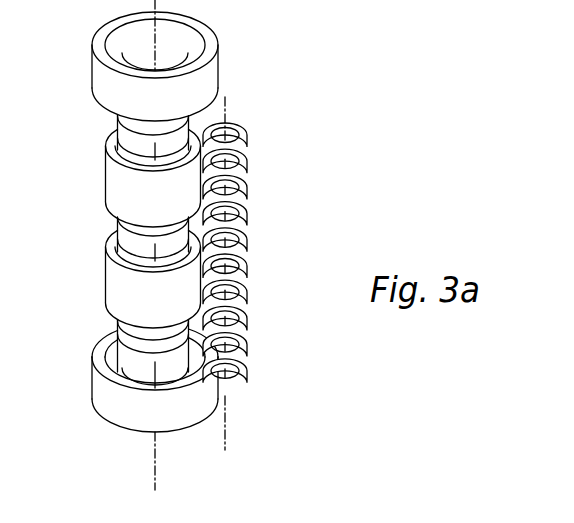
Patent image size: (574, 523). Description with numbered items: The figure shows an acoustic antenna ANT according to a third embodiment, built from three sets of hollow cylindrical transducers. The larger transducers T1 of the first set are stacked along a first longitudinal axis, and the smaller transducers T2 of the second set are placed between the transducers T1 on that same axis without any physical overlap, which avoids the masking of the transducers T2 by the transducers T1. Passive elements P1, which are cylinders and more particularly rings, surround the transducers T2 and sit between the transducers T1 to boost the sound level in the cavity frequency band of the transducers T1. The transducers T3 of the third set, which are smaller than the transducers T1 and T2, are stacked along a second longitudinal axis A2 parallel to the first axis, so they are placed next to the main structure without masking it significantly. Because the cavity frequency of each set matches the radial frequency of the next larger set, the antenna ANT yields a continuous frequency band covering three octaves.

The hollow cylindrical transducer of the first set T1 is at (207, 70).
The hollow cylindrical transducer of the second set T2 is at (110, 125).
The passive element P1 is at (122, 187).
The transducer of the third set T3 is at (248, 200).
The second longitudinal axis A2 is at (227, 112).
The acoustic antenna ANT is at (292, 228).